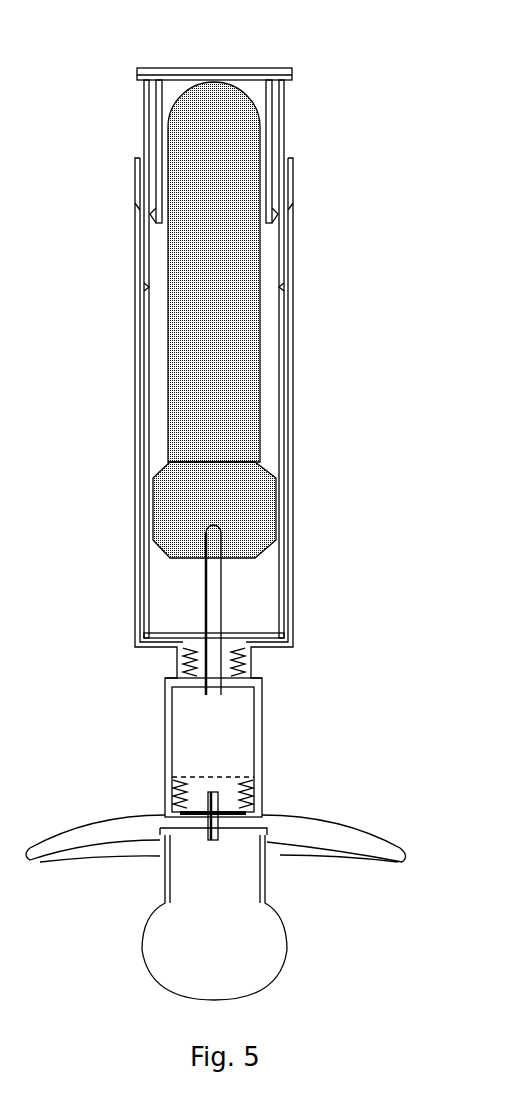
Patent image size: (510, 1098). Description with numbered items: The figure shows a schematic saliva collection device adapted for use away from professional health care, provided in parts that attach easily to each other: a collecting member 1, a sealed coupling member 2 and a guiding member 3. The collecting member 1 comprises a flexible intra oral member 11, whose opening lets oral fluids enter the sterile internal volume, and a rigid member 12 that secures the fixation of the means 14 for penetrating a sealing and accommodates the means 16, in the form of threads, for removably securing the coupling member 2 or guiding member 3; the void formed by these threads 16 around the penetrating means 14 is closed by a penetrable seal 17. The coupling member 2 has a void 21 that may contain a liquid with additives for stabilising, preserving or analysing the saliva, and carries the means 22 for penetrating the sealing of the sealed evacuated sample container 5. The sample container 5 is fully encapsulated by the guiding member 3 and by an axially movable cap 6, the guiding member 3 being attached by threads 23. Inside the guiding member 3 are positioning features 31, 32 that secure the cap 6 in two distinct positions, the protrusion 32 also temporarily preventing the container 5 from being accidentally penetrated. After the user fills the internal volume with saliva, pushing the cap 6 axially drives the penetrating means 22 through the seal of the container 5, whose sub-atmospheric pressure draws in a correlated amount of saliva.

The collecting member 1 is at (408, 810).
The coupling member 2 is at (405, 670).
The guiding member 3 is at (400, 658).
The sealed evacuated sample container 5 is at (224, 182).
The axially movable cap 6 is at (264, 64).
The flexible intra oral member 11 is at (259, 938).
The rigid member 12 is at (306, 812).
The means for penetrating a sealing 14 is at (211, 850).
The means for removably securing a coupling member or guiding member 16 is at (167, 797).
The penetrable seal 17 is at (228, 779).
The void of the coupling member 21 is at (226, 742).
The means for penetrating a sealing of the sealed evacuated sample container 22 is at (234, 622).
The threads 23 is at (184, 670).
The positioning feature inside the guiding member 31 is at (300, 268).
The protrusion 32 is at (142, 547).